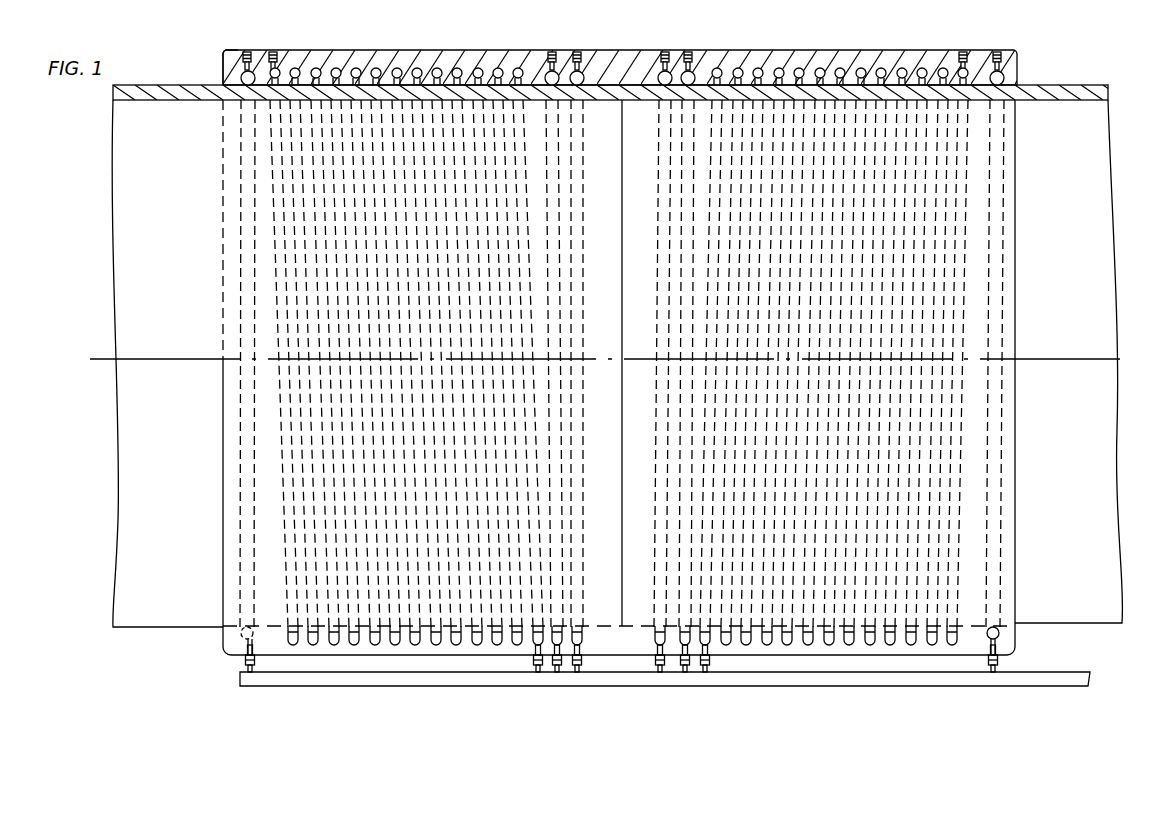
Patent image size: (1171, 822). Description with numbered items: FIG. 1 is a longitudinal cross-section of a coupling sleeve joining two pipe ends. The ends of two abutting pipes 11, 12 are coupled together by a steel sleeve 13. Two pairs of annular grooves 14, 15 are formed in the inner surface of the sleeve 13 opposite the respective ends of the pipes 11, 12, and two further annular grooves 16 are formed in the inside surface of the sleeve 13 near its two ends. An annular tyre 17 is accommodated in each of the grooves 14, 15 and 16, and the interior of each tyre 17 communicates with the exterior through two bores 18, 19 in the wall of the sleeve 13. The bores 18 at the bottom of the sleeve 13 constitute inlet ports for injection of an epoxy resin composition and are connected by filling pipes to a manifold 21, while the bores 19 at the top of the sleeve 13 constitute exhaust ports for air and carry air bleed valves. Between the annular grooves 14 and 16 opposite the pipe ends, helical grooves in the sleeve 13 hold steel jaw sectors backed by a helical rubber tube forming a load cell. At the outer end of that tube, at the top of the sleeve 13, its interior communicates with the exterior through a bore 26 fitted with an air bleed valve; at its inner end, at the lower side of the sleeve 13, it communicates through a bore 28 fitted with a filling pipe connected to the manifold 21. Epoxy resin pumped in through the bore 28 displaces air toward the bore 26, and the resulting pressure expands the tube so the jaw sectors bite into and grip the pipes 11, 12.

The pipe 11 is at (185, 244).
The pipe 12 is at (1076, 226).
The sleeve 13 is at (621, 62).
The annular groove 14 is at (551, 71).
The annular groove 15 is at (581, 70).
The annular groove 16 is at (251, 72).
The annular tyre 17 is at (240, 636).
The bore 18 is at (244, 656).
The bore 19 is at (223, 62).
The manifold 21 is at (398, 684).
The bore 26 is at (277, 67).
The bore 28 is at (533, 656).